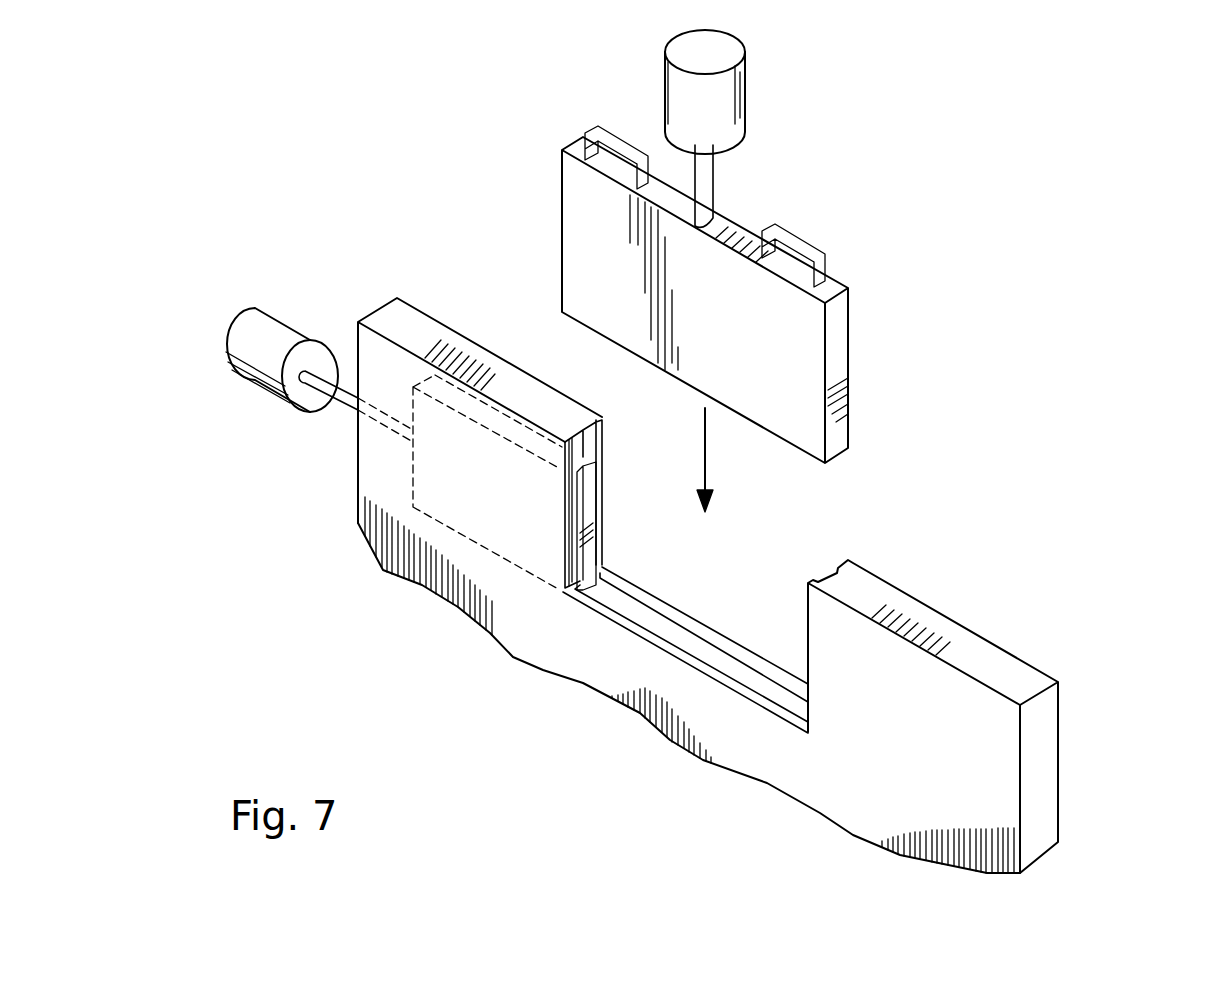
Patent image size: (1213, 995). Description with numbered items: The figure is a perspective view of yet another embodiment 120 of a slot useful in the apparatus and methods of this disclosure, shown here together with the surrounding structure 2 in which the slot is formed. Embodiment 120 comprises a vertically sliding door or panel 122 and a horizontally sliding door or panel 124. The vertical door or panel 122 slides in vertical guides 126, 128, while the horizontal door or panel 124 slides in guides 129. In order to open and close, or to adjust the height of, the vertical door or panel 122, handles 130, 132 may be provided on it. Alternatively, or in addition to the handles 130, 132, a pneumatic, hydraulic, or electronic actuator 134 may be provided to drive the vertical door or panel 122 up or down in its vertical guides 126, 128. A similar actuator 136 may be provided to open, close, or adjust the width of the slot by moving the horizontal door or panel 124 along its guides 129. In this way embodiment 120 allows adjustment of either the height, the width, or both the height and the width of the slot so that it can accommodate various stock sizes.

The lens block 2 is at (872, 592).
The embodiment of a slot 120 is at (1100, 284).
The vertically sliding door or panel 122 is at (577, 213).
The horizontally sliding door or panel 124 is at (590, 498).
The vertical guide 126 is at (603, 433).
The vertical guide 128 is at (570, 538).
The guides 129 is at (640, 628).
The handle 130 is at (805, 246).
The handle 132 is at (625, 148).
The actuator 134 is at (748, 90).
The actuator 136 is at (258, 322).